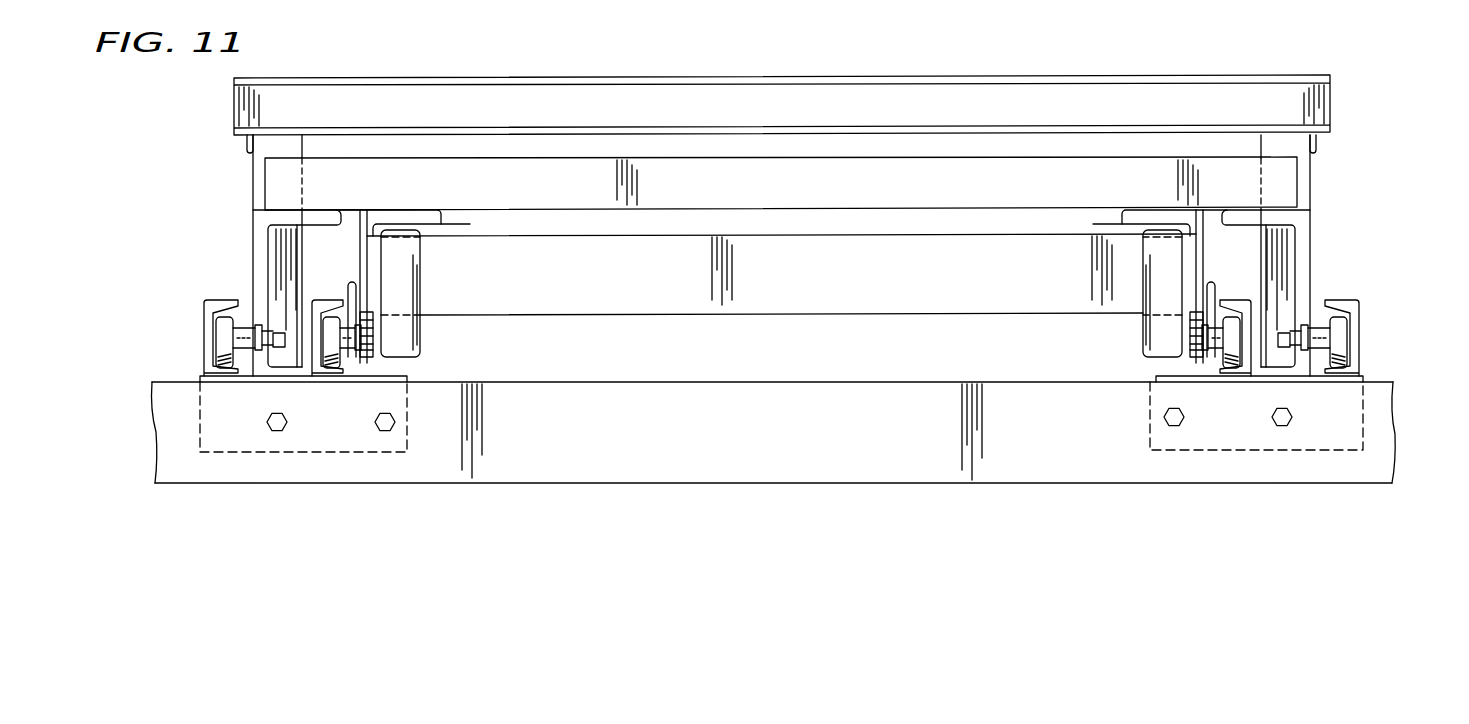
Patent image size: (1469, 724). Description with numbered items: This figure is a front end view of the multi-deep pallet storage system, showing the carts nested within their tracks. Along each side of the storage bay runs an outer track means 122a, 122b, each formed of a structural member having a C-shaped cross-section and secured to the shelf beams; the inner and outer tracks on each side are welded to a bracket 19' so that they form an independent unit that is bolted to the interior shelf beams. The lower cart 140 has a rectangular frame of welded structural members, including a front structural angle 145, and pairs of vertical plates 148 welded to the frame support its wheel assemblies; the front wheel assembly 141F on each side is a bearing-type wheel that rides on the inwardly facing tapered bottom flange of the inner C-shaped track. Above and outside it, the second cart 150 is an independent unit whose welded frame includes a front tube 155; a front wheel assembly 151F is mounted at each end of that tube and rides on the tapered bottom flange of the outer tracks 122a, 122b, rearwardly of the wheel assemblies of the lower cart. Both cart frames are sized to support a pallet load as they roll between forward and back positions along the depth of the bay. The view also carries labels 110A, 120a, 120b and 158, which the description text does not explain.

The bracket 19' is at (774, 432).
The frame member 110A is at (403, 6).
The left mounting bracket 120a is at (328, 378).
The right mounting bracket 120b is at (1231, 378).
The outer track means 122a is at (207, 300).
The outer track means 122b is at (1353, 303).
The lower cart 140 is at (826, 279).
The front wheel assembly 141F is at (340, 367).
The front structural angle 145 is at (960, 287).
The vertical plates 148 is at (1203, 317).
The second cart 150 is at (684, 190).
The front wheel assembly 151F is at (222, 338).
The front tube 155 is at (915, 198).
The frame 158 is at (1310, 235).